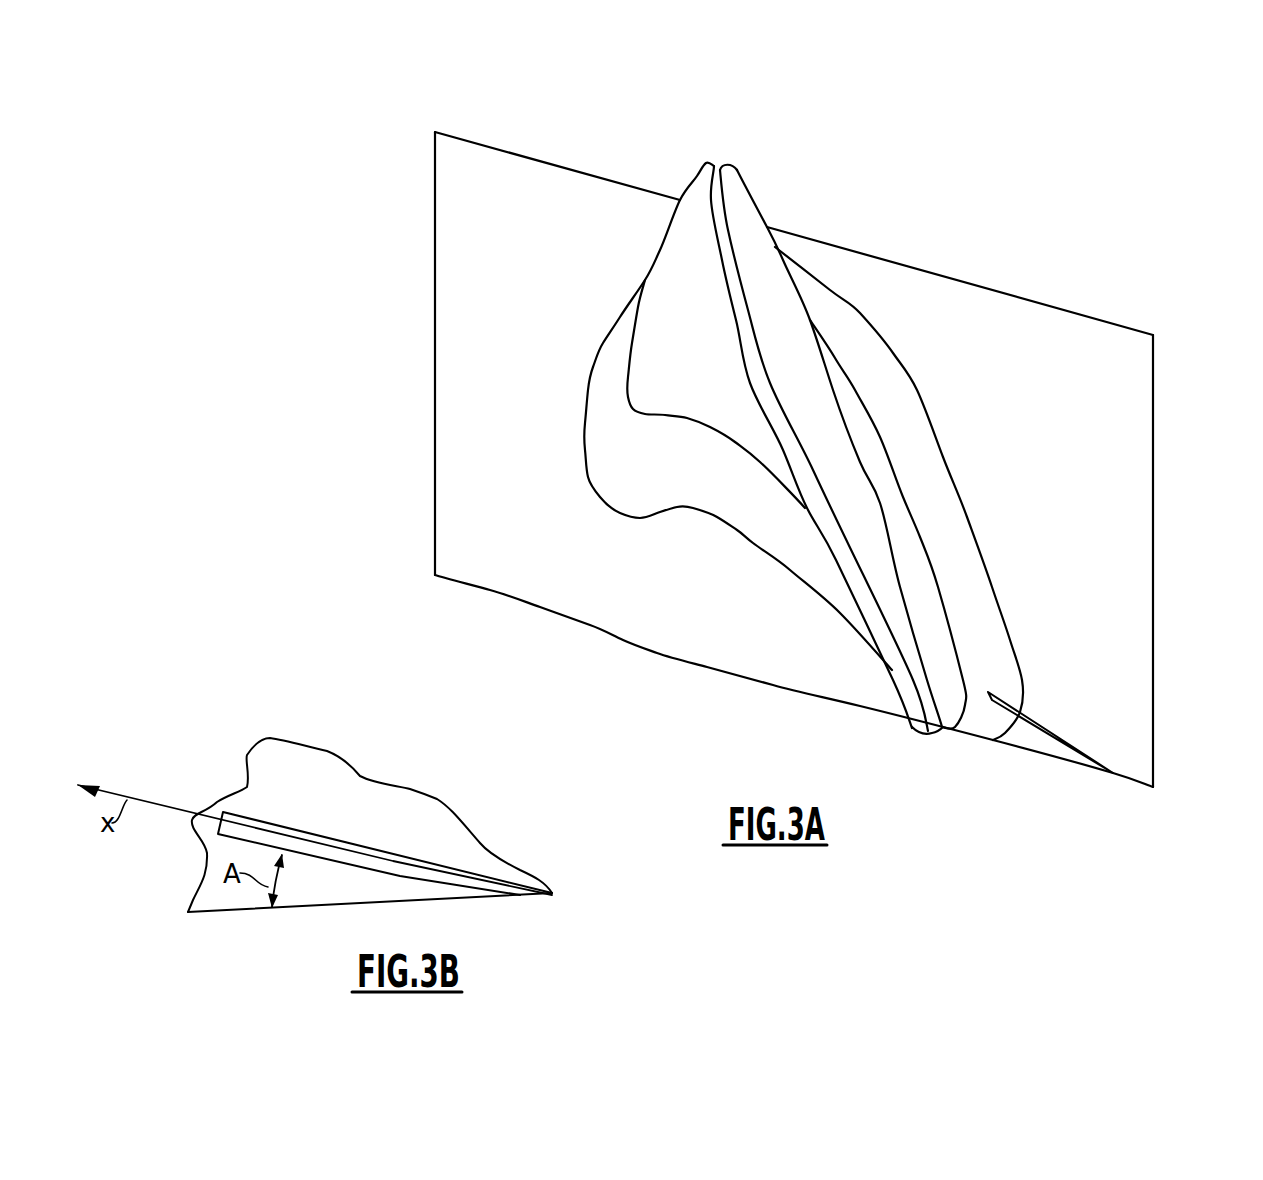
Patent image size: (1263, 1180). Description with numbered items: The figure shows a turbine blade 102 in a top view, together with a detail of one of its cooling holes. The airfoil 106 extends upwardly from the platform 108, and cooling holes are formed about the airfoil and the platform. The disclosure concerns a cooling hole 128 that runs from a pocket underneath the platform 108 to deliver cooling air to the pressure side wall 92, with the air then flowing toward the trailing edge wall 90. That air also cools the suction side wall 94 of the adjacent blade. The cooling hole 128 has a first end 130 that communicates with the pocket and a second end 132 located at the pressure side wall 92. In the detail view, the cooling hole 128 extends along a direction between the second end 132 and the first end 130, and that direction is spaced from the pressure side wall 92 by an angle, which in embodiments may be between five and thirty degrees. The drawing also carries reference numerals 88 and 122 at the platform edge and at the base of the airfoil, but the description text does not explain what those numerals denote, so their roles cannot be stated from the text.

In FIG. 3A, the turbine blade 102 is at (352, 142).
In FIG. 3A, the first side edge of platform 88 is at (435, 406).
In FIG. 3A, the trailing edge wall 90 is at (1153, 570).
In FIG. 3A, the pressure side wall 92 is at (705, 668).
In FIG. 3B, the pressure side wall 92 is at (307, 910).
In FIG. 3A, the suction side wall 94 is at (1003, 290).
In FIG. 3A, the airfoil 106 is at (760, 268).
In FIG. 3A, the platform 108 is at (502, 475).
In FIG. 3A, the fillet 122 is at (897, 708).
In FIG. 3A, the cooling hole 128 is at (1065, 748).
In FIG. 3B, the cooling hole 128 is at (280, 835).
In FIG. 3A, the first end 130 is at (988, 692).
In FIG. 3B, the first end 130 is at (213, 810).
In FIG. 3A, the second end 132 is at (1111, 775).
In FIG. 3B, the second end 132 is at (520, 897).